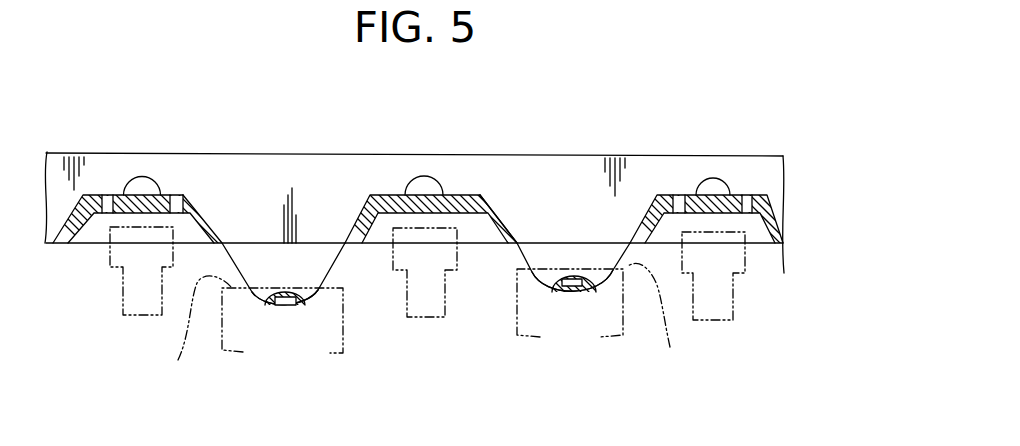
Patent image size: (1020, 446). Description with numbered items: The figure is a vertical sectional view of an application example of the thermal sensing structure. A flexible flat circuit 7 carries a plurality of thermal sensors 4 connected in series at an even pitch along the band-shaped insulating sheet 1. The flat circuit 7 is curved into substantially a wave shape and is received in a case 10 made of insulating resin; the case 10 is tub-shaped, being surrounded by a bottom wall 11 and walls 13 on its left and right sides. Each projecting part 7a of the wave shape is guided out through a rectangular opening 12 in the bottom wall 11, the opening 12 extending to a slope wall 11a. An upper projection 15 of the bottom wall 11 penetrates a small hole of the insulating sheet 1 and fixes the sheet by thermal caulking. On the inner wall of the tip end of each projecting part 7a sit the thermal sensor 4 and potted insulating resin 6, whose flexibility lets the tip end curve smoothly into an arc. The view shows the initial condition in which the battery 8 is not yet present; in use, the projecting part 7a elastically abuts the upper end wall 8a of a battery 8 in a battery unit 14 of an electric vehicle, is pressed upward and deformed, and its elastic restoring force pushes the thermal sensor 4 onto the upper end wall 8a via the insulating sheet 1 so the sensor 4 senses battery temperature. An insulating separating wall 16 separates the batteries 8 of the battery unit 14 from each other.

The insulating sheet 1 is at (46, 246).
The thermal sensor 4 is at (285, 305).
The insulating resin 6 is at (299, 290).
The flexible flat circuit 7 is at (342, 280).
The projecting part 7a is at (250, 293).
The battery 8 is at (345, 320).
The upper end wall 8a is at (425, 330).
The case 10 is at (651, 151).
The bottom wall 11 is at (461, 195).
The slope wall 11a is at (505, 214).
The opening 12 is at (243, 248).
The wall 13 is at (697, 157).
The battery unit 14 is at (781, 297).
The upper projection 15 is at (411, 184).
The insulating separating wall 16 is at (737, 288).